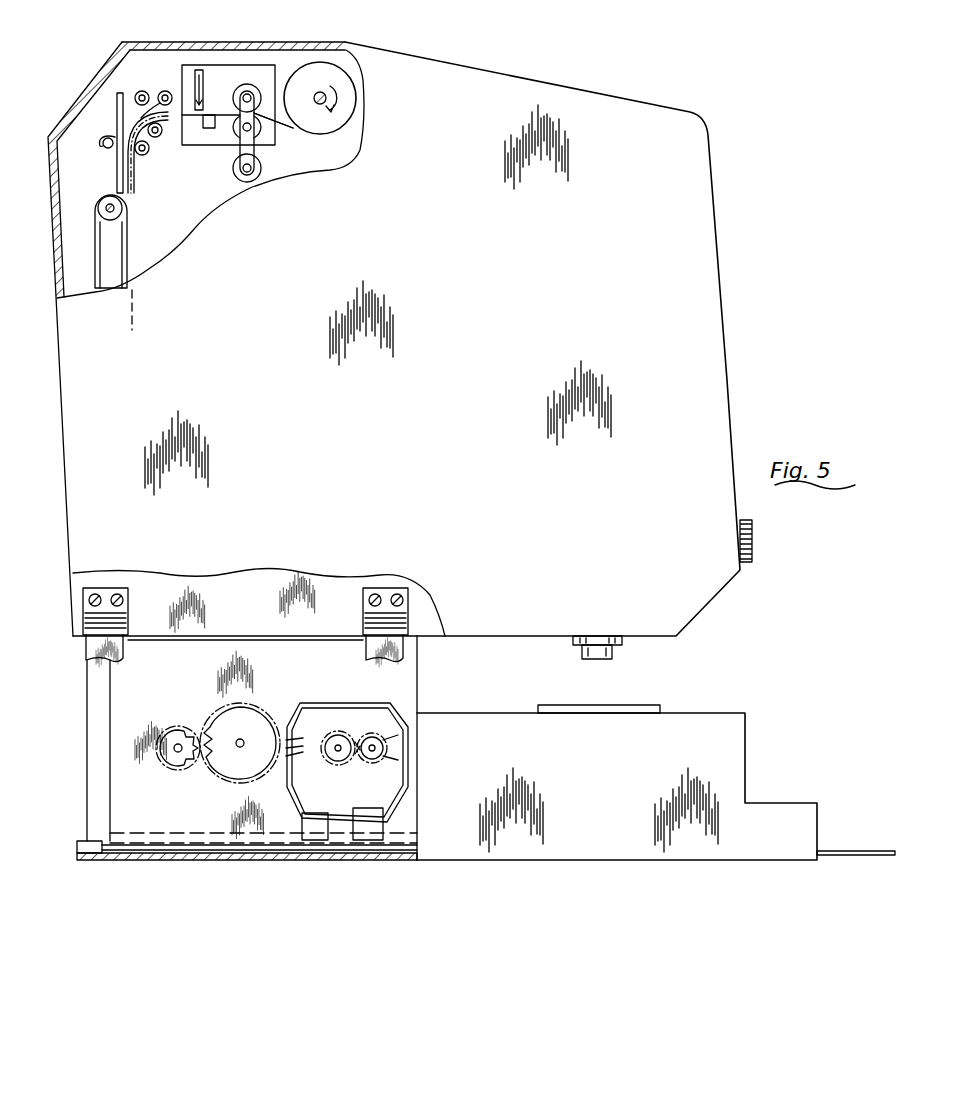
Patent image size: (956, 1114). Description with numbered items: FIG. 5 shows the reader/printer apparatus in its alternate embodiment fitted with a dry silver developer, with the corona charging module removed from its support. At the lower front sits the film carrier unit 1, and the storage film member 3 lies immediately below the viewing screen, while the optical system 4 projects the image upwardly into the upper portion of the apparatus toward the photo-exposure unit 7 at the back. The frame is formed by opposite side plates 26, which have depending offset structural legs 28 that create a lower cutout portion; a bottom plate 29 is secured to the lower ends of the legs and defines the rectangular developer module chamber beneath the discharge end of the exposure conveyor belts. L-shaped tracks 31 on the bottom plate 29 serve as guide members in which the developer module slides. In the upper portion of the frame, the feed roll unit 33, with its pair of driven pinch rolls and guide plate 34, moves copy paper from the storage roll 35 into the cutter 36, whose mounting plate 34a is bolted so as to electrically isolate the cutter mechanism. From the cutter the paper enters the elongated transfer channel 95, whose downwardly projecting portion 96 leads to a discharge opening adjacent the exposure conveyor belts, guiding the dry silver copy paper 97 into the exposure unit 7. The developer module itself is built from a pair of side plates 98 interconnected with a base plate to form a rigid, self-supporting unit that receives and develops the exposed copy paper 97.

The film carrier unit 1 is at (746, 745).
The storage film member 3 is at (662, 705).
The optical system 4 is at (568, 657).
The photo-exposure unit 7 is at (138, 238).
The side plates 26 is at (165, 640).
The structural leg 28 is at (97, 650).
The bottom plate 29 is at (197, 861).
The L-shaped tracks 31 is at (163, 831).
The feed roll unit 33 is at (246, 77).
The guide plate 34 is at (221, 113).
The mounting plate 34a is at (272, 66).
The storage roll 35 is at (351, 100).
The cutter 36 is at (195, 55).
The elongated transfer channel 95 is at (112, 166).
The downwardly projecting portion 96 is at (136, 182).
The dry silver copy paper 97 is at (293, 141).
The side plates 98 is at (252, 748).